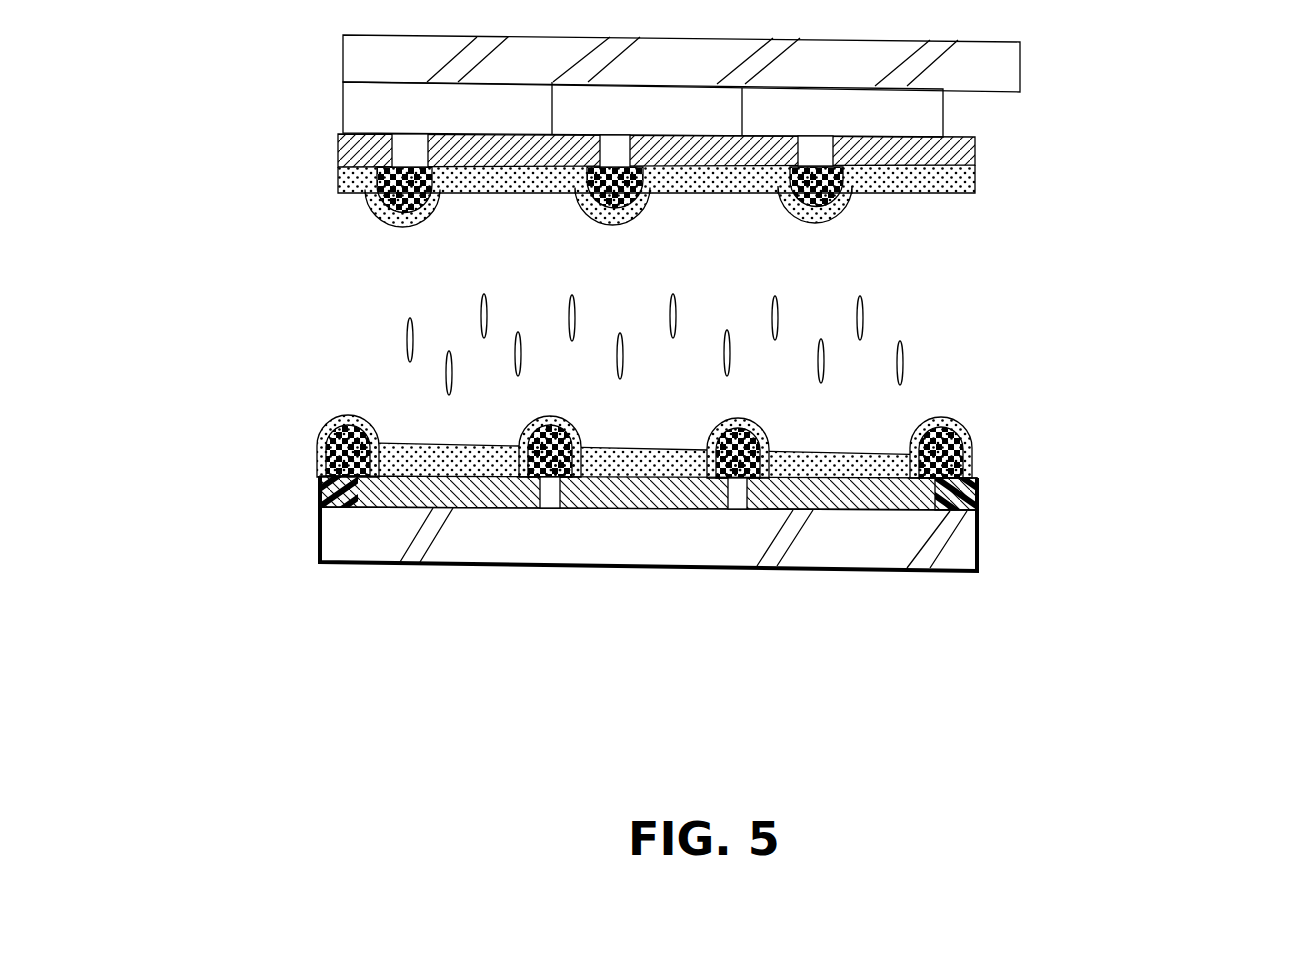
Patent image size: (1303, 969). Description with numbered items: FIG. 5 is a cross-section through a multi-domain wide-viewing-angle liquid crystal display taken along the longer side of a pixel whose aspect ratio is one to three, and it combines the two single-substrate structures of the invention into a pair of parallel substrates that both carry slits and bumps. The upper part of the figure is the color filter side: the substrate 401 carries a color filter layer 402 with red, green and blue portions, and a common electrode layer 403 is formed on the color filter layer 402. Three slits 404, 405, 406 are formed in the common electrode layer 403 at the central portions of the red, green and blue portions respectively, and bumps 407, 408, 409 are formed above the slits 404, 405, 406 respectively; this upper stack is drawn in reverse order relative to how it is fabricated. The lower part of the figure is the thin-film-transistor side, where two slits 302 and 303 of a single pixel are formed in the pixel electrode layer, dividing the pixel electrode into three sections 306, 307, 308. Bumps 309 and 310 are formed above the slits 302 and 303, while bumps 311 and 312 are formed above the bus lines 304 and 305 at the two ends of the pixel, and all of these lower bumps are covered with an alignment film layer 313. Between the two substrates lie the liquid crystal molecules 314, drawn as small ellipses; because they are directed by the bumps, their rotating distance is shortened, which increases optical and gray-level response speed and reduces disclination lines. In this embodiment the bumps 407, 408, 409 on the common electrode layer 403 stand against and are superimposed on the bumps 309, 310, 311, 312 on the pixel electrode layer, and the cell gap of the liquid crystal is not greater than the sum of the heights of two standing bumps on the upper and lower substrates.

The substrate 401 is at (1021, 64).
The color filter layer 402 is at (943, 107).
The common electrode layer 403 is at (975, 147).
The slit 404 is at (413, 153).
The slit 405 is at (603, 155).
The slit 406 is at (817, 148).
The bump 407 is at (407, 215).
The bump 408 is at (597, 215).
The bump 409 is at (833, 200).
The liquid crystal molecules 314 is at (908, 370).
The alignment film layer 313 is at (338, 410).
The bump 312 is at (327, 437).
The bus line 305 is at (320, 493).
The bump 311 is at (413, 508).
The pixel electrode section 306 is at (482, 510).
The slit 302 is at (550, 482).
The pixel electrode section 307 is at (647, 510).
The slit 303 is at (740, 484).
The pixel electrode section 308 is at (840, 510).
The bump 310 is at (765, 435).
The bump 309 is at (975, 463).
The bus line 304 is at (980, 505).